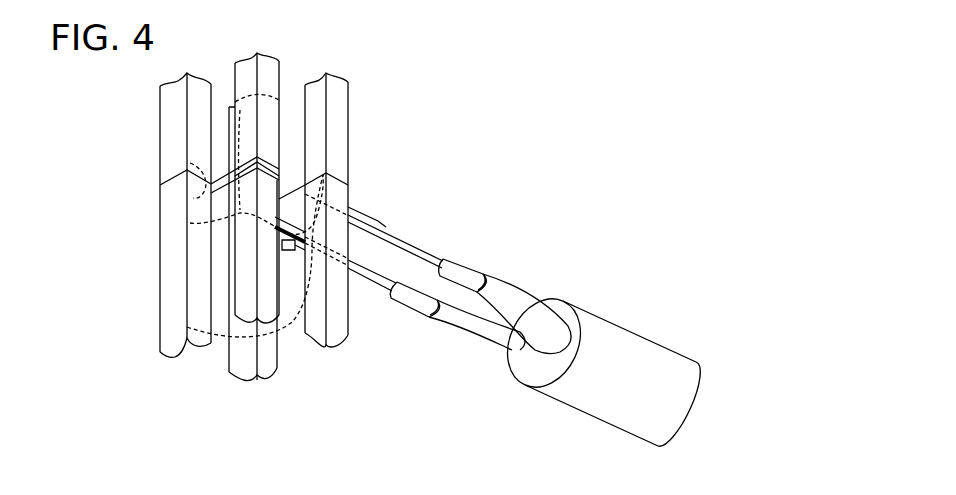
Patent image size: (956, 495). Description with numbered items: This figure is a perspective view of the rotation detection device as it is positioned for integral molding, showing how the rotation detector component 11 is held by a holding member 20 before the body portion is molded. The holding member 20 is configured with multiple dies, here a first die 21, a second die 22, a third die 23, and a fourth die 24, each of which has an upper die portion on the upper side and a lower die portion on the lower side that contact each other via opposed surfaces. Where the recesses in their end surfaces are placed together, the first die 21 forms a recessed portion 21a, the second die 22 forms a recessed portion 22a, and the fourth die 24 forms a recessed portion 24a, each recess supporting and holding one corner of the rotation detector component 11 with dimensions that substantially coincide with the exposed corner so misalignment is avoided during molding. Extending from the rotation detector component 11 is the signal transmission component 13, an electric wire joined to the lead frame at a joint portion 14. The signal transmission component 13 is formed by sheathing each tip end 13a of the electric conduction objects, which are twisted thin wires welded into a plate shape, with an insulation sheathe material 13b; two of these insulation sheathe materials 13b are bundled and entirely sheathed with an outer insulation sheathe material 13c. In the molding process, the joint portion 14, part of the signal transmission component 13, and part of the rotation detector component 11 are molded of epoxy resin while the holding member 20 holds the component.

The rotation detector component 11 is at (291, 160).
The signal transmission component 13 is at (663, 272).
The tip end 13a is at (388, 258).
The insulation sheathe material 13b is at (470, 328).
The insulation sheathe material 13c is at (618, 352).
The joint portion 14 is at (370, 208).
The holding member 20 is at (87, 108).
The first die 21 is at (177, 131).
The recessed portion 21a is at (190, 163).
The second die 22 is at (245, 248).
The recessed portion 22a is at (190, 223).
The third die 23 is at (233, 323).
The fourth die 24 is at (328, 340).
The recessed portion 24a is at (187, 327).